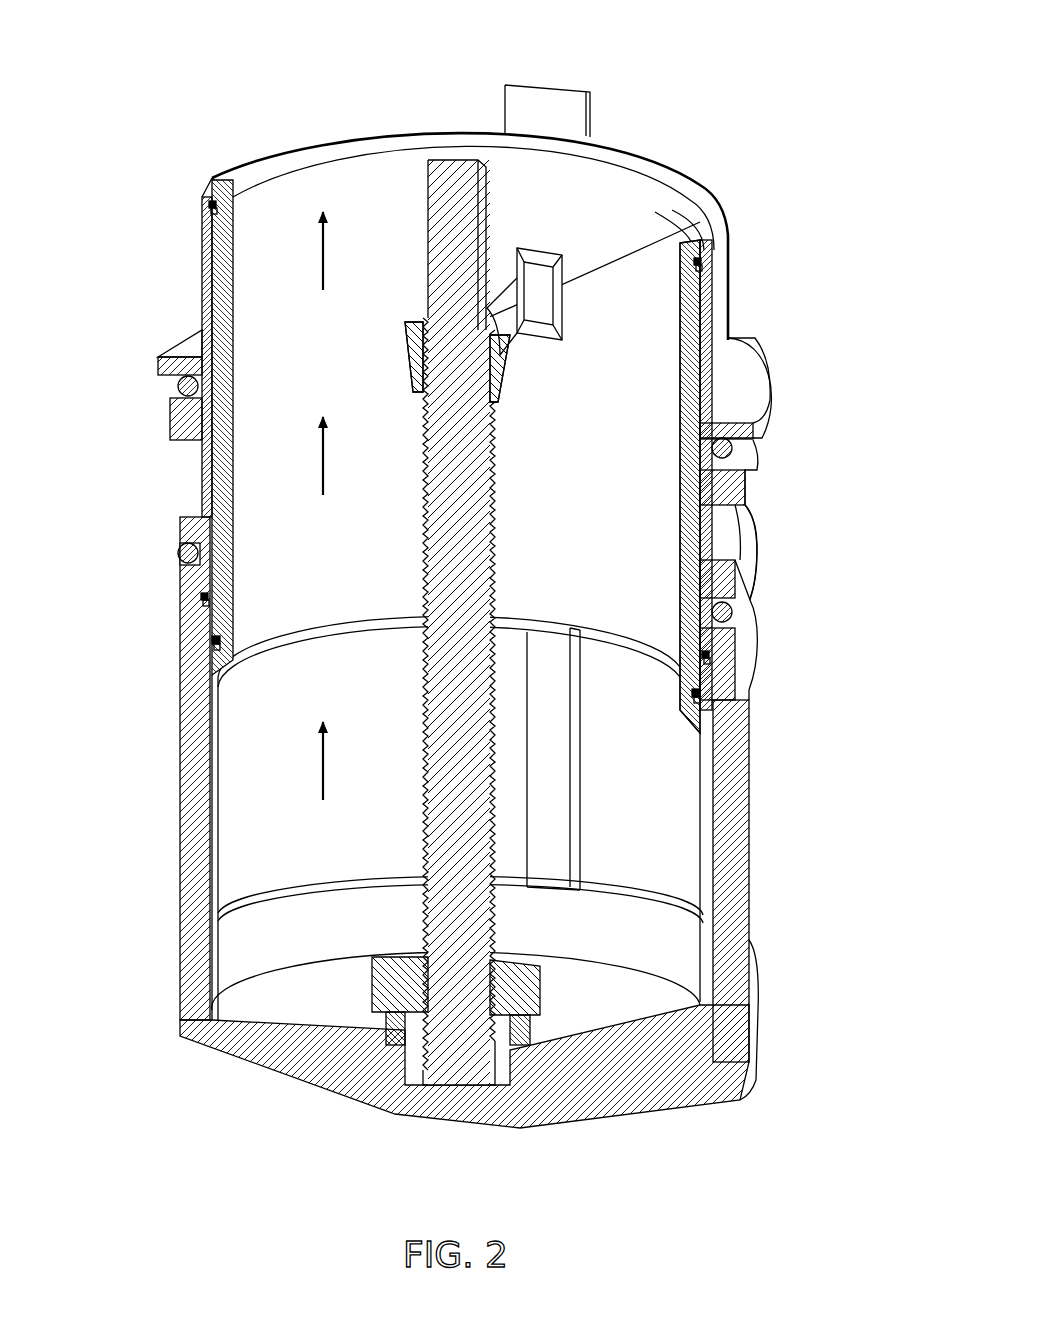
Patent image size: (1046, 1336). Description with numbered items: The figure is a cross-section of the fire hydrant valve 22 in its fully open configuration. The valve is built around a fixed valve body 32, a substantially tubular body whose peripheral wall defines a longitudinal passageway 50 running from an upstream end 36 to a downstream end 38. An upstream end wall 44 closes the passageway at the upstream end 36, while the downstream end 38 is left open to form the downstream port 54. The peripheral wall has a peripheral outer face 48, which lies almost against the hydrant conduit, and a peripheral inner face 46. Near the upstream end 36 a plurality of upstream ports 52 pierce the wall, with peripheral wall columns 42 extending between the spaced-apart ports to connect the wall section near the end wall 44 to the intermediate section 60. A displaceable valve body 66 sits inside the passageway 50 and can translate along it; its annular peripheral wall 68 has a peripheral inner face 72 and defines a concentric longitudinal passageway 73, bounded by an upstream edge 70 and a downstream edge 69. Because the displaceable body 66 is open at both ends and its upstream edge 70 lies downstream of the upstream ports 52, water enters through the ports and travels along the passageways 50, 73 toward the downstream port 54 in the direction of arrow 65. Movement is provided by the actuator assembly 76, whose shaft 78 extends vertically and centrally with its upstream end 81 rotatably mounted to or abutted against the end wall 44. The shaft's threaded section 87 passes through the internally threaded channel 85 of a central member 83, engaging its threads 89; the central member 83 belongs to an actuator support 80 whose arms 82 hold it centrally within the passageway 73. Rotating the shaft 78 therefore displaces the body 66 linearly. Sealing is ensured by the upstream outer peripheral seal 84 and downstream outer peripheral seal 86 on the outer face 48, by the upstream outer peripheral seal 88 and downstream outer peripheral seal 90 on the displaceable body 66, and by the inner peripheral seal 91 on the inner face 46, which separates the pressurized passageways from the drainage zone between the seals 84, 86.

The fire hydrant valve 22 is at (212, 66).
The fixed valve body 32 is at (720, 400).
The upstream end 36 is at (182, 1020).
The downstream end 38 is at (210, 290).
The peripheral wall columns 42 is at (565, 774).
The upstream end wall 44 is at (645, 1040).
The peripheral inner face 46 is at (586, 951).
The peripheral outer face 48 is at (749, 1022).
The longitudinal passageway 50 is at (310, 862).
The upstream ports 52 is at (238, 794).
The downstream port 54 is at (410, 208).
The intermediate section 60 is at (744, 656).
The arrow 65 is at (320, 258).
The displaceable valve body 66 is at (250, 478).
The peripheral wall 68 is at (688, 540).
The downstream edge 69 is at (464, 135).
The upstream edge 70 is at (278, 647).
The peripheral inner face 72 is at (568, 583).
The longitudinal passageway 73 is at (600, 188).
The actuator assembly 76 is at (495, 194).
The shaft 78 is at (428, 540).
The actuator support 80 is at (532, 308).
The upstream end 81 is at (425, 1072).
The arms 82 is at (716, 222).
The central member 83 is at (507, 378).
The upstream outer peripheral seal 84 is at (185, 553).
The internally threaded channel 85 is at (498, 418).
The downstream outer peripheral seal 86 is at (186, 384).
The threaded section 87 is at (428, 455).
The upstream outer peripheral seal 88 is at (212, 641).
The threads 89 is at (436, 395).
The downstream outer peripheral seal 90 is at (209, 205).
The inner peripheral seal 91 is at (201, 597).